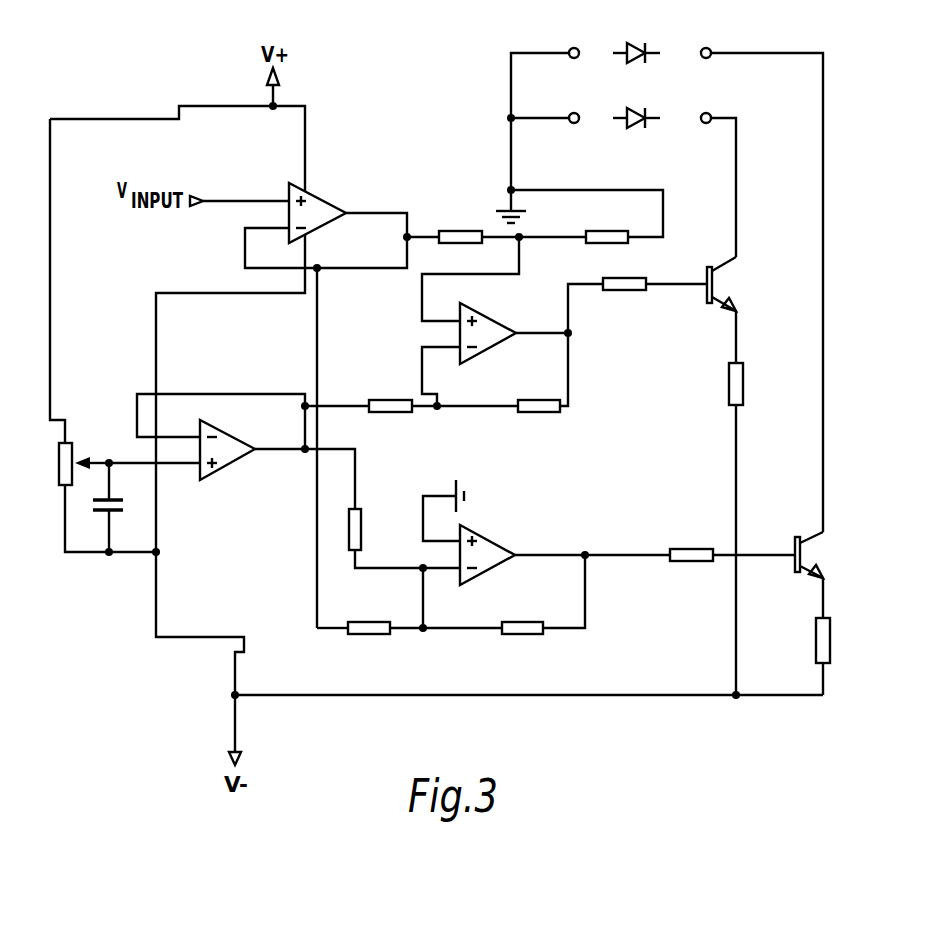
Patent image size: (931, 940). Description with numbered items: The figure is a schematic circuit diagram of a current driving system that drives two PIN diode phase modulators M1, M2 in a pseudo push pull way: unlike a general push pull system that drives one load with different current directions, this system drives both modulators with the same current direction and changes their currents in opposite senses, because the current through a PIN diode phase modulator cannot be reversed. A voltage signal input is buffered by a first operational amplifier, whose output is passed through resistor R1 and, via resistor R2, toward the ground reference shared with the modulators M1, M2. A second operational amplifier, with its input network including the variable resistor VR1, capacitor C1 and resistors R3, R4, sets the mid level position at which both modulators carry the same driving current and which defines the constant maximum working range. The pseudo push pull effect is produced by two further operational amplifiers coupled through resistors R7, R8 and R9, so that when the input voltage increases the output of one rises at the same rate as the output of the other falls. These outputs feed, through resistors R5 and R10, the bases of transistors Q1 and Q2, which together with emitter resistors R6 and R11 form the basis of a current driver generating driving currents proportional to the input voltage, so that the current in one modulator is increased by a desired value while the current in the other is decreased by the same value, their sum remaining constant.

The resistor R1 is at (460, 226).
The resistor R2 is at (607, 226).
The resistor R3 is at (390, 393).
The resistor R4 is at (539, 393).
The resistor R5 is at (624, 272).
The resistor R6 is at (748, 384).
The resistor R7 is at (368, 529).
The resistor R8 is at (369, 616).
The resistor R9 is at (522, 616).
The resistor R10 is at (691, 542).
The resistor R11 is at (839, 640).
The transistor Q1 is at (732, 284).
The transistor Q2 is at (820, 555).
The phase modulator M1 is at (636, 105).
The phase modulator M2 is at (636, 39).
The variable resistor (potentiometer) VR1 is at (83, 456).
The capacitor C1 is at (115, 507).